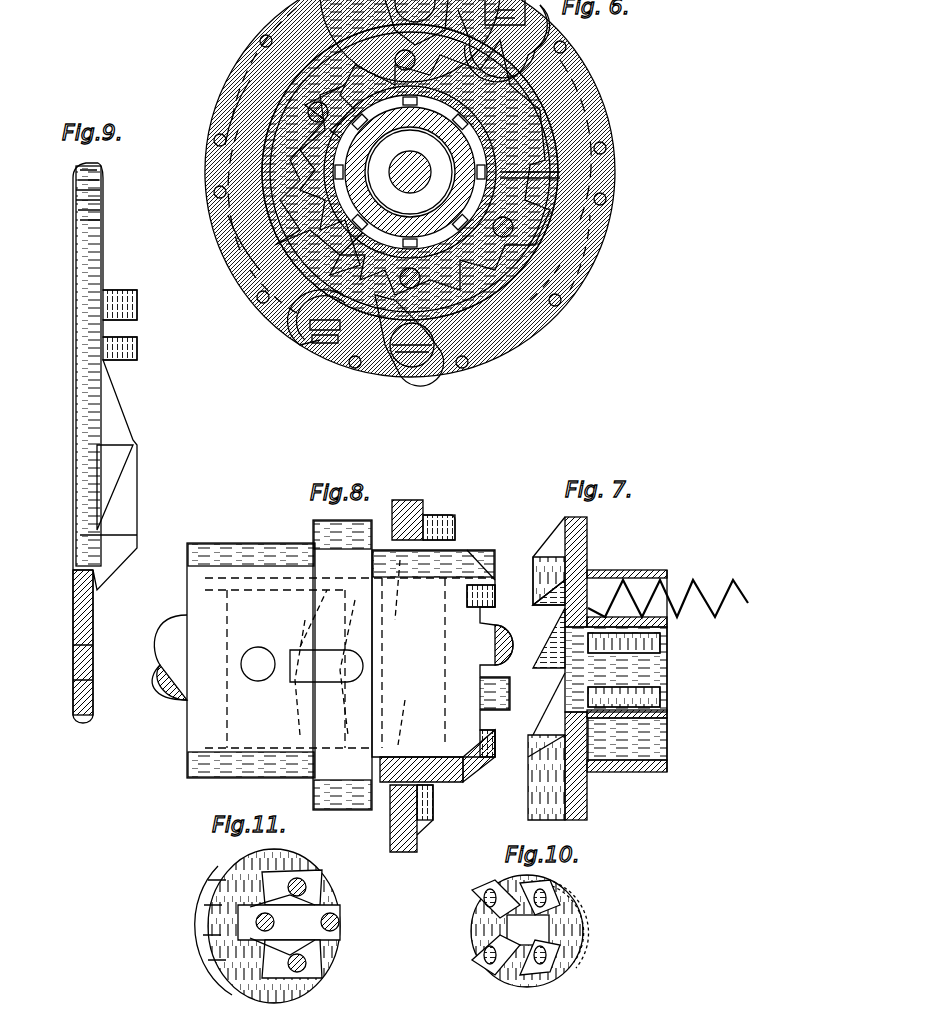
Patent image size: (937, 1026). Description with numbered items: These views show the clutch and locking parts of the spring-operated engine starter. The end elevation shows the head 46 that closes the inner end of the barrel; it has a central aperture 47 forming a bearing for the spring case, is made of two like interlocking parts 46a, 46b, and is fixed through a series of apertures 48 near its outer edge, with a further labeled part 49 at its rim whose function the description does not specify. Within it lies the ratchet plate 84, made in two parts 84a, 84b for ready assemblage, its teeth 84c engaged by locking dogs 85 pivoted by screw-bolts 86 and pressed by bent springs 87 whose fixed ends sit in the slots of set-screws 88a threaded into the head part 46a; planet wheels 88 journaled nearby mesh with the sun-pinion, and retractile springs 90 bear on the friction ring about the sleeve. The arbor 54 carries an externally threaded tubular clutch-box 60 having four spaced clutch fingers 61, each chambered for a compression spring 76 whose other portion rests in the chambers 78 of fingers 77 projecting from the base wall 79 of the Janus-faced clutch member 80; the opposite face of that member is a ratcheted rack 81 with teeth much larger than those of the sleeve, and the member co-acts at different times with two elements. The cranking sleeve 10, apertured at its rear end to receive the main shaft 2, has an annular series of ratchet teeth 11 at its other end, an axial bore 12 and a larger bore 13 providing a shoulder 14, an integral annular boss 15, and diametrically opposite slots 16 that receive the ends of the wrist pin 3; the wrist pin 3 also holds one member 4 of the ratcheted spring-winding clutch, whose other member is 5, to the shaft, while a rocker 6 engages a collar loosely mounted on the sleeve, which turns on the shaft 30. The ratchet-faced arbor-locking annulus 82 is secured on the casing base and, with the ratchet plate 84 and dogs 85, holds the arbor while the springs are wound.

In FIG. 8, the main shaft 2 is at (160, 644).
In FIG. 8, the wrist pin 3 is at (258, 652).
In FIG. 8, the clutch member 4 is at (320, 672).
In FIG. 8, the clutch member 5 is at (415, 715).
In FIG. 8, the rocker 6 is at (320, 618).
In FIG. 6, the cranking sleeve 10 is at (372, 245).
In FIG. 8, the cranking sleeve 10 is at (442, 666).
In FIG. 8, the ratchet teeth 11 is at (496, 560).
In FIG. 8, the axial bore 12 is at (186, 720).
In FIG. 8, the larger bore 13 is at (252, 560).
In FIG. 8, the shoulder 14 is at (388, 545).
In FIG. 8, the annular boss 15 is at (356, 810).
In FIG. 8, the slots 16 is at (250, 652).
In FIG. 6, the shaft 30 is at (422, 274).
In FIG. 8, the shaft 30 is at (510, 682).
In FIG. 7, the shaft 30 is at (545, 704).
In FIG. 6, the head 46 is at (582, 106).
In FIG. 6, the head part 46a is at (222, 100).
In FIG. 6, the head part 46b is at (228, 222).
In FIG. 6, the central aperture 47 is at (452, 90).
In FIG. 6, the apertures 48 is at (568, 45).
In FIG. 6, the casing rim 49 is at (614, 174).
In FIG. 6, the arbor 54 is at (543, 182).
In FIG. 10, the clutch-box 60 is at (505, 922).
In FIG. 10, the clutch fingers 61 is at (480, 892).
In FIG. 7, the compression spring 76 is at (710, 588).
In FIG. 7, the fingers 77 is at (652, 570).
In FIG. 11, the fingers 77 is at (312, 878).
In FIG. 7, the chambers 78 is at (670, 606).
In FIG. 11, the chambers 78 is at (308, 878).
In FIG. 7, the base wall 79 is at (588, 533).
In FIG. 6, the Janus-faced clutch member 80 is at (513, 225).
In FIG. 7, the Janus-faced clutch member 80 is at (591, 668).
In FIG. 11, the Janus-faced clutch member 80 is at (245, 926).
In FIG. 6, the ratcheted rack 81 is at (364, 92).
In FIG. 7, the ratcheted rack 81 is at (548, 650).
In FIG. 11, the ratcheted rack 81 is at (212, 875).
In FIG. 9, the arbor-locking annulus 82 is at (78, 443).
In FIG. 8, the arbor-locking annulus 82 is at (425, 505).
In FIG. 6, the ratchet plate 84 is at (300, 210).
In FIG. 6, the ratchet plate part 84a is at (520, 112).
In FIG. 6, the ratchet plate part 84b is at (370, 248).
In FIG. 6, the teeth 84c is at (500, 290).
In FIG. 6, the locking dogs 85 is at (395, 385).
In FIG. 6, the screw-bolts 86 is at (415, 368).
In FIG. 6, the bent springs 87 is at (525, 48).
In FIG. 6, the planet wheels 88 is at (405, 60).
In FIG. 6, the set-screws 88a is at (312, 350).
In FIG. 6, the retractile springs 90 is at (410, 172).